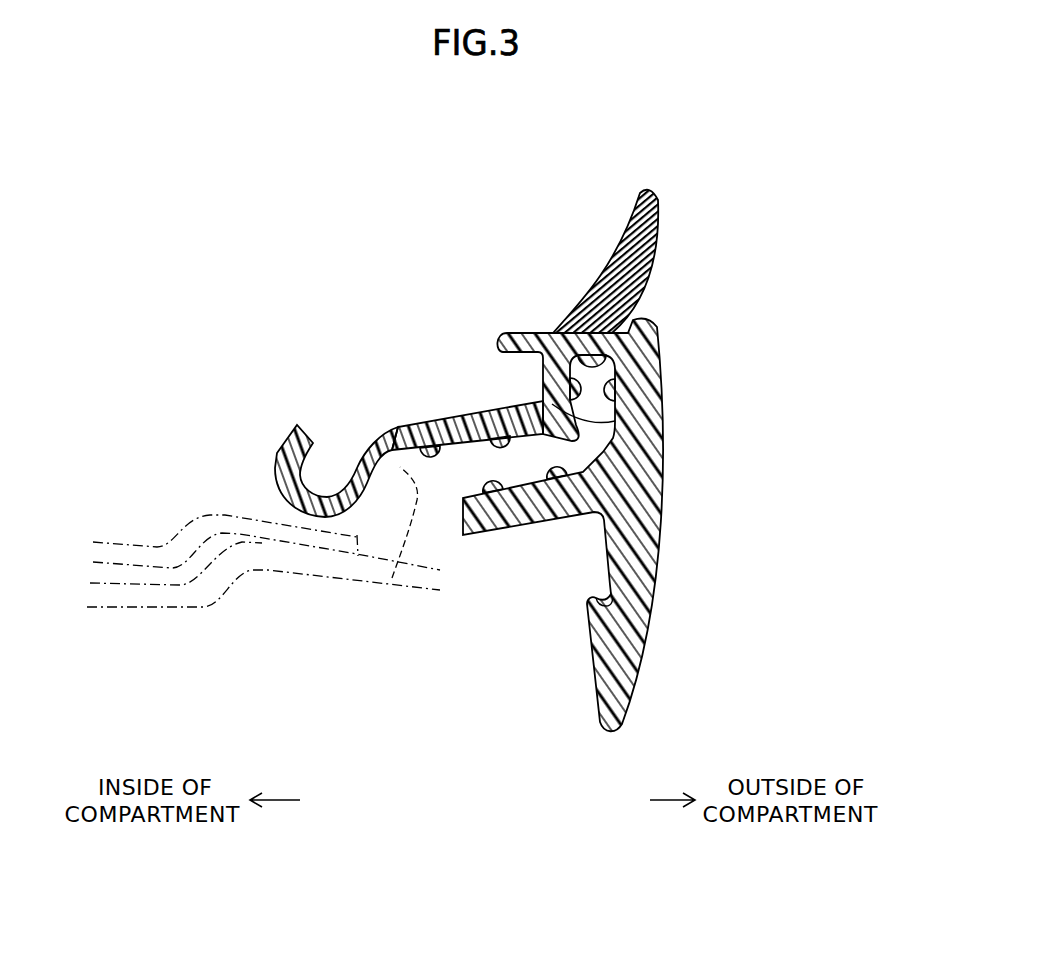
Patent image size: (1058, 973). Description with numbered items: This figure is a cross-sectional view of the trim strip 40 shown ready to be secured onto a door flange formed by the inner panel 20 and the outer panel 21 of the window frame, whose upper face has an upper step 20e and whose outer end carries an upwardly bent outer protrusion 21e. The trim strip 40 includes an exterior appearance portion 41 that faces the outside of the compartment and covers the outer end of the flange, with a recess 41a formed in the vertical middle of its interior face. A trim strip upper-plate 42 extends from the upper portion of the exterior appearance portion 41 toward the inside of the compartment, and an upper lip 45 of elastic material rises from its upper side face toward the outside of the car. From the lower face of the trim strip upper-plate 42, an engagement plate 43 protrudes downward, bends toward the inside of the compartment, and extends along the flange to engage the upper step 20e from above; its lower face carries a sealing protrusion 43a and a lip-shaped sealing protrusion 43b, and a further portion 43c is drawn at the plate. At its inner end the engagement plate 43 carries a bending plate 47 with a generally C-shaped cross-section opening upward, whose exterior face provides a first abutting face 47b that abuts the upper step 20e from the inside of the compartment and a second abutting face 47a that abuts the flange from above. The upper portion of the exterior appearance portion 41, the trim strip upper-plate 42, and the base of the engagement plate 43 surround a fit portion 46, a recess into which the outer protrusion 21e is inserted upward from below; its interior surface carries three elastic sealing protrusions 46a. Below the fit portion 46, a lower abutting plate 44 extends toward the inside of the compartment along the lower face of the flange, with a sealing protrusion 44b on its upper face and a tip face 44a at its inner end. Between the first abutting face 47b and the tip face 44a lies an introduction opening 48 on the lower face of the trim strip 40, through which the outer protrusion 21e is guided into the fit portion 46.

The inner panel 20 is at (96, 538).
The upper step 20e is at (163, 545).
The outer panel 21 is at (160, 613).
The outer protrusion 21e is at (372, 440).
The trim strip 40 is at (486, 303).
The exterior appearance portion 41 is at (661, 512).
The recess 41a is at (586, 598).
The trim strip upper-plate 42 is at (545, 343).
The engagement plate 43 is at (463, 423).
The sealing protrusion 43a is at (403, 428).
The sealing protrusion 43b is at (643, 447).
The projection of arm 43c is at (507, 336).
The lower abutting plate 44 is at (543, 502).
The tip face 44a is at (462, 522).
The sealing protrusion 44b is at (497, 438).
The upper lip 45 is at (630, 218).
The fit portion 46 is at (612, 332).
The sealing protrusions 46a is at (600, 406).
The bending plate 47 is at (278, 492).
The second abutting face 47a is at (332, 517).
The first abutting face 47b is at (370, 488).
The introduction opening 48 is at (436, 495).